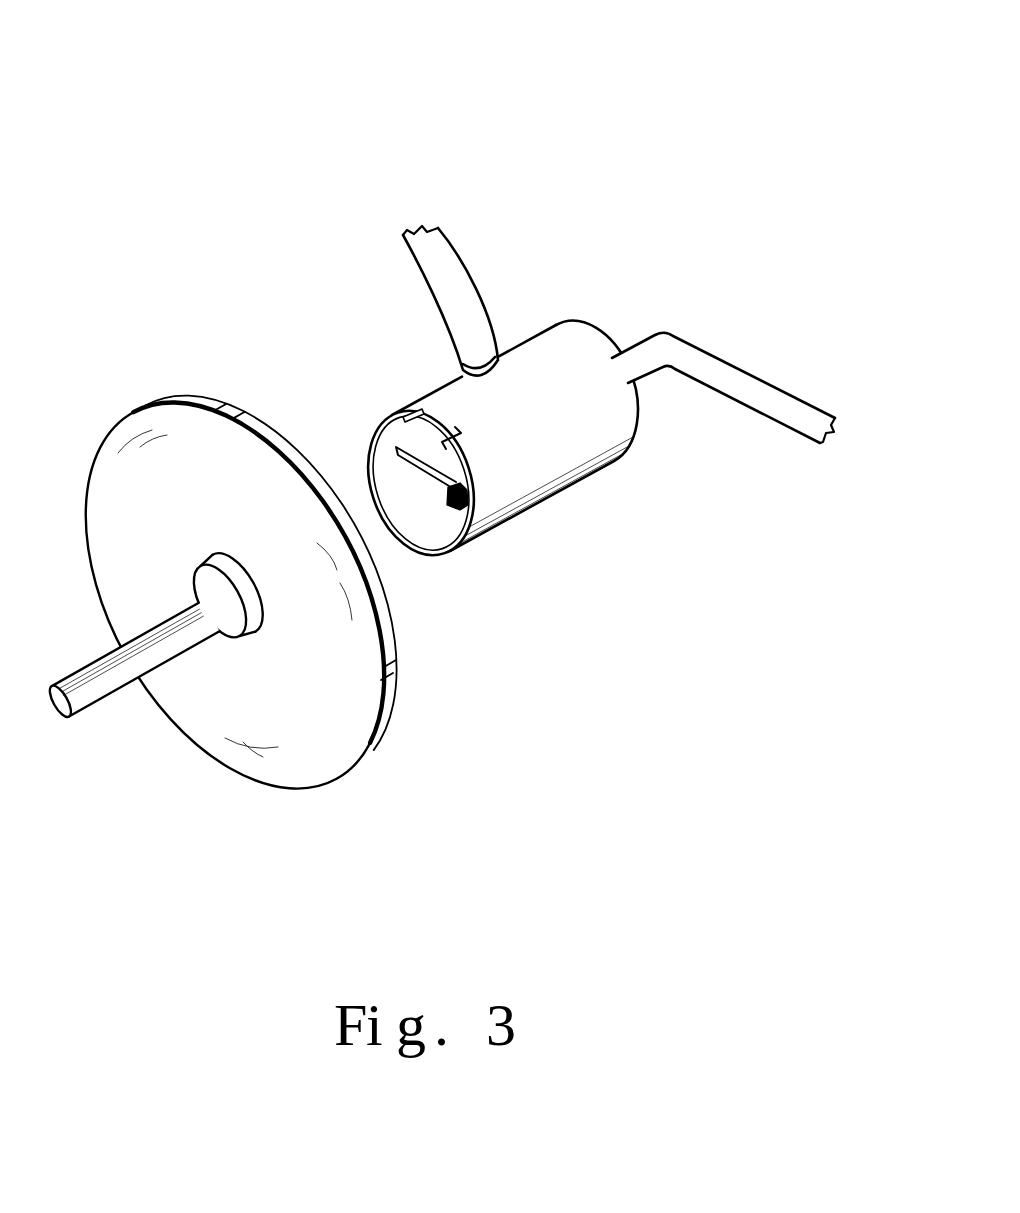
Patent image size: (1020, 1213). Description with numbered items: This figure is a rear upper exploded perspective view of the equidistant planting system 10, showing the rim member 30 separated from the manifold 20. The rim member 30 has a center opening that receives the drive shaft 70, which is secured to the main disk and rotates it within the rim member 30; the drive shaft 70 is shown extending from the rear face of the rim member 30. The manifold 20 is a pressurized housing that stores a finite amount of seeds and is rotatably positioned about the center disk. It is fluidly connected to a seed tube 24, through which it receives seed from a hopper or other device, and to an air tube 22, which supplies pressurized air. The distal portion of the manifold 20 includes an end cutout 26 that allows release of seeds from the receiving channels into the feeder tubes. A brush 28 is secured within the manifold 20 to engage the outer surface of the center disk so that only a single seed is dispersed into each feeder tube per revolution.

The equidistant planting system 10 is at (574, 95).
The manifold 20 is at (566, 330).
The air tube 22 is at (780, 395).
The seed tube 24 is at (448, 252).
The end cutout 26 is at (408, 410).
The brush 28 is at (478, 533).
The rim member 30 is at (227, 705).
The drive shaft 70 is at (113, 665).